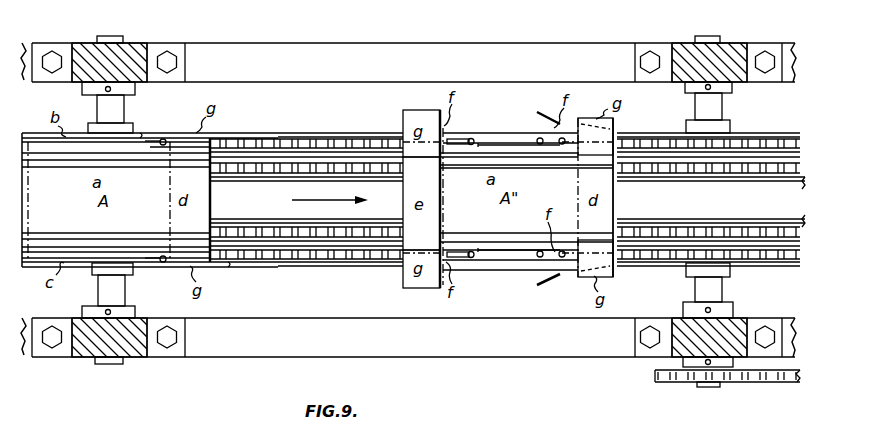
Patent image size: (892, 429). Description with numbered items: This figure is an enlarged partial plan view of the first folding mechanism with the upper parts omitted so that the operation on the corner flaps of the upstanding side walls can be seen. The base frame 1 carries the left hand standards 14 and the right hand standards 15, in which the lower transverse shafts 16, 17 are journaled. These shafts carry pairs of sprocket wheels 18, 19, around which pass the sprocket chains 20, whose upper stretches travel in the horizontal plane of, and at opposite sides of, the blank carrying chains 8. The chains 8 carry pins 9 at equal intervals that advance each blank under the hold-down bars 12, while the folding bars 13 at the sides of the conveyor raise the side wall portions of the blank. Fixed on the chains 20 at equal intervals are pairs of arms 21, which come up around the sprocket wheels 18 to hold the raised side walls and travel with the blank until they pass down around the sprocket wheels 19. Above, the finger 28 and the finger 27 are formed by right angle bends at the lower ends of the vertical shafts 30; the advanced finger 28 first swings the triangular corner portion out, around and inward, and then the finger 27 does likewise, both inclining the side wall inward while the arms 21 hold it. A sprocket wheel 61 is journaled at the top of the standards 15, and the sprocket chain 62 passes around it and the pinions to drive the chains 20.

The base frame 1 is at (322, 57).
The chains 8 is at (245, 172).
The pins 9 is at (400, 226).
The hold-down bars 12 is at (62, 162).
The folding bars 13 is at (140, 137).
The left hand standards 14 is at (91, 49).
The right hand standards 15 is at (683, 47).
The lower transverse shaft 16 is at (116, 291).
The lower transverse shaft 17 is at (695, 290).
The sprocket wheels 18 is at (130, 126).
The sprocket wheels 19 is at (756, 140).
The sprocket chains 20 is at (299, 140).
The arms 21 is at (478, 130).
The finger 27 is at (448, 162).
The finger 28 is at (174, 148).
The shaft 30 is at (454, 134).
The sprocket wheel 61 is at (680, 383).
The sprocket chain 62 is at (751, 377).